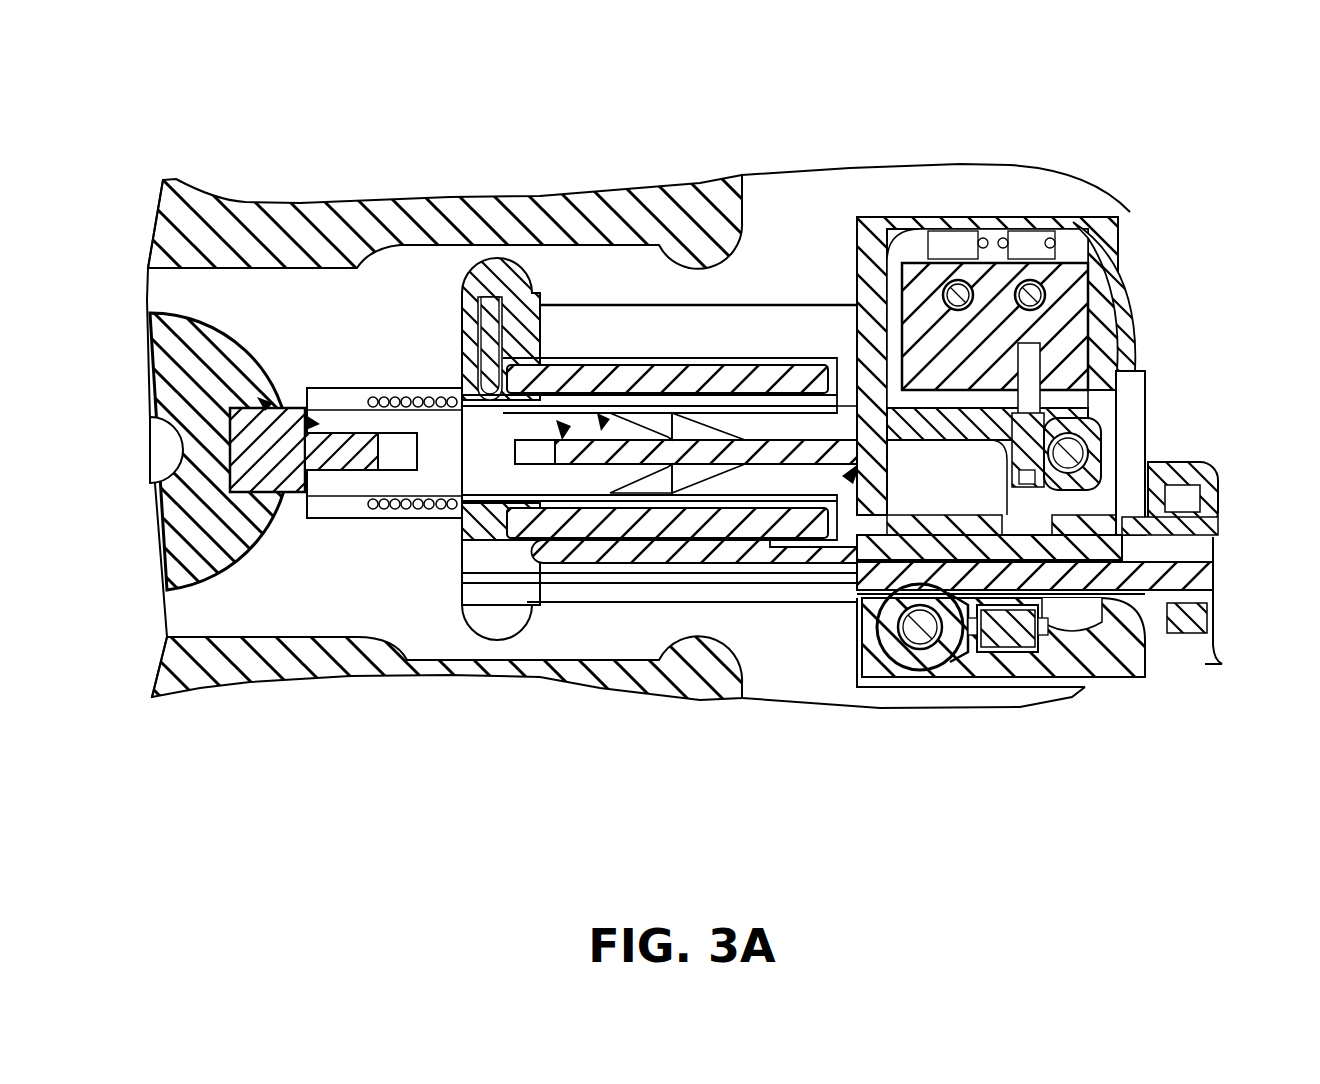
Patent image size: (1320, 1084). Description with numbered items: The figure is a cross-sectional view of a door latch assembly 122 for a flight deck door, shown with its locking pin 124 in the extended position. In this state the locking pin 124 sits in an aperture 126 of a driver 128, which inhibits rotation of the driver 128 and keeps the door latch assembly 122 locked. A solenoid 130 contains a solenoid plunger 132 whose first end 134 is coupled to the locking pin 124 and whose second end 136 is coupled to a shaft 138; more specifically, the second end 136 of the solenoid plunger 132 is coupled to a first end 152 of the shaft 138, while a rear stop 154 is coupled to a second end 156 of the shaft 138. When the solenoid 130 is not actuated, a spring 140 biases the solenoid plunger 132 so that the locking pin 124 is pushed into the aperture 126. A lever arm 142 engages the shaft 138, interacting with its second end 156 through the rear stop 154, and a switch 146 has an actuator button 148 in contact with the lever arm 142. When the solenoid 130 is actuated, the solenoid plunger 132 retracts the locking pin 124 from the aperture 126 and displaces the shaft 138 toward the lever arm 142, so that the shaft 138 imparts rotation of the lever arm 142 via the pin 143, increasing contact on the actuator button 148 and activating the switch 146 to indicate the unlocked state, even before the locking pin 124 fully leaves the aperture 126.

The door latch assembly 122 is at (210, 99).
The locking pin 124 is at (297, 470).
The aperture 126 is at (307, 423).
The driver 128 is at (237, 338).
The solenoid 130 is at (735, 388).
The solenoid plunger 132 is at (480, 457).
The first end 134 is at (358, 415).
The second end 136 is at (612, 412).
The shaft 138 is at (662, 427).
The spring 140 is at (423, 512).
The lever arm 142 is at (953, 437).
The pin 143 is at (1077, 437).
The switch 146 is at (1077, 325).
The actuator button 148 is at (1030, 380).
The first end 152 is at (567, 423).
The rear stop 154 is at (858, 466).
The second end 156 is at (812, 462).